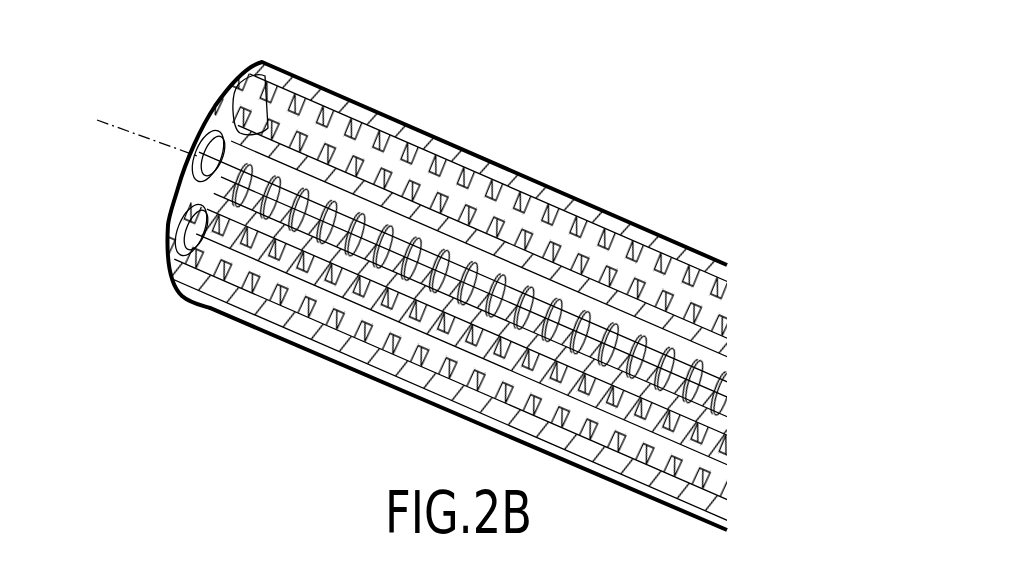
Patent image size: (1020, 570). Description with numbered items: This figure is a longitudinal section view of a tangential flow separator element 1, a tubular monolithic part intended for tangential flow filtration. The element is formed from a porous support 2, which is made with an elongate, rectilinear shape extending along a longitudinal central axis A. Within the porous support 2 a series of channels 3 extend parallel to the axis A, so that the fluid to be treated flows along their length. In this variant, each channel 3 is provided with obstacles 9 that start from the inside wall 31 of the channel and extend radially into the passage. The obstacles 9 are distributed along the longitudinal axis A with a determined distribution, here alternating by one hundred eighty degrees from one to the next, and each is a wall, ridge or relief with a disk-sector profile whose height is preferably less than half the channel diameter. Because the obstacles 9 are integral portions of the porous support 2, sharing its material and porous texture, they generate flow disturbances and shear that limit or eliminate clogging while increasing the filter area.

The tangential flow separator element 1 is at (512, 293).
The porous support 2 is at (177, 190).
The channels 3 is at (238, 96).
The obstacles 9 is at (406, 183).
The inside walls of the channels 31 is at (503, 208).
The longitudinal central axis A is at (103, 120).